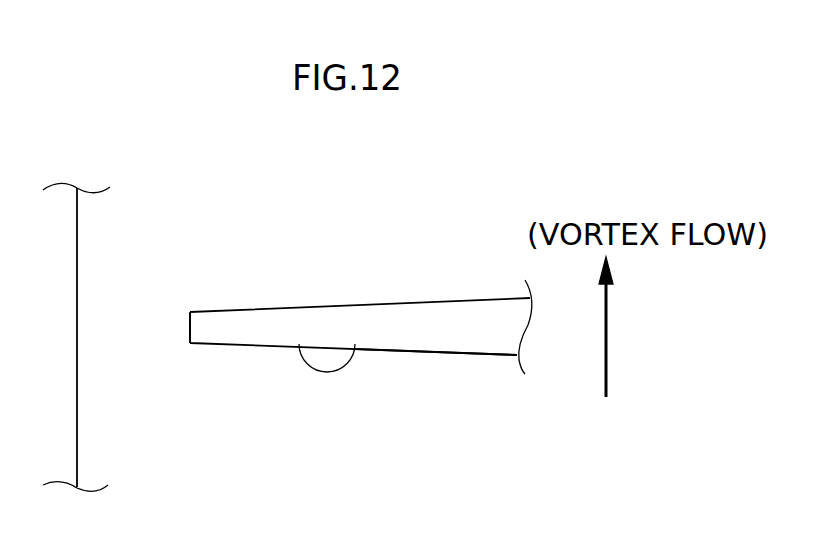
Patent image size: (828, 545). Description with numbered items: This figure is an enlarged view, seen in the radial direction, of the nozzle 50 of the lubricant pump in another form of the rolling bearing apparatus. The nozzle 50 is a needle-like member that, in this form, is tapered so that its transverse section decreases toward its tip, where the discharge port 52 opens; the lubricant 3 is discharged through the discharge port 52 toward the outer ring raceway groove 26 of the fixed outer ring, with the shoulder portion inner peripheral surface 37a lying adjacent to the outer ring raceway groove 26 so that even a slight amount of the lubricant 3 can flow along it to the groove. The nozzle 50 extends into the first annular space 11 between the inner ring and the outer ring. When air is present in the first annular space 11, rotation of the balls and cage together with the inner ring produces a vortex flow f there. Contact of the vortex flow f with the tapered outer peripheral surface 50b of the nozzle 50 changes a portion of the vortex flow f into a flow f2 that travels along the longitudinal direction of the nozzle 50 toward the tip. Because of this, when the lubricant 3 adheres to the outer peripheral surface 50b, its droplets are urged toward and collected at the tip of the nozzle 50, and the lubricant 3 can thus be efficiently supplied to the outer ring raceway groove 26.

The outer ring raceway groove 26 is at (42, 357).
The shoulder portion inner peripheral surface 37a is at (143, 297).
The nozzle 50 is at (392, 318).
The discharge port 52 is at (190, 327).
The lubricant 3 is at (344, 357).
The outer peripheral surface 50b is at (441, 352).
The first annular space 11 is at (469, 384).
The vortex flow f is at (327, 378).
The flow f2 is at (322, 357).